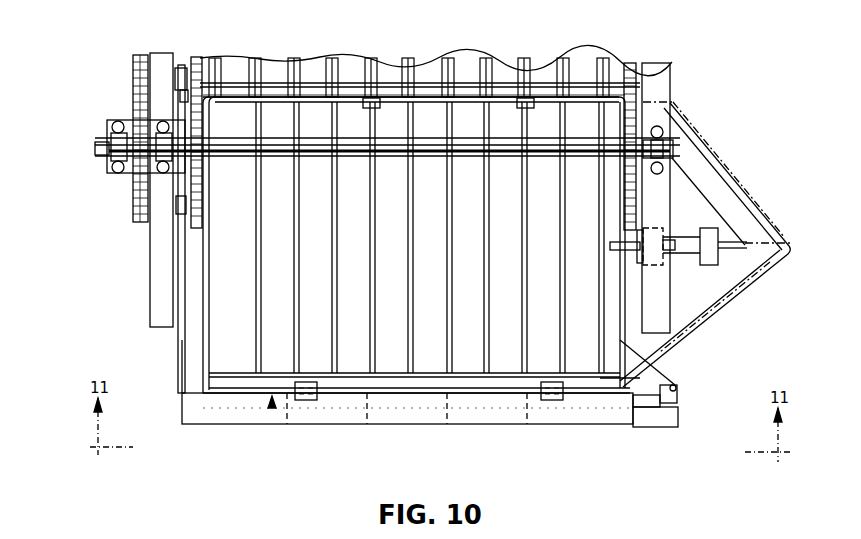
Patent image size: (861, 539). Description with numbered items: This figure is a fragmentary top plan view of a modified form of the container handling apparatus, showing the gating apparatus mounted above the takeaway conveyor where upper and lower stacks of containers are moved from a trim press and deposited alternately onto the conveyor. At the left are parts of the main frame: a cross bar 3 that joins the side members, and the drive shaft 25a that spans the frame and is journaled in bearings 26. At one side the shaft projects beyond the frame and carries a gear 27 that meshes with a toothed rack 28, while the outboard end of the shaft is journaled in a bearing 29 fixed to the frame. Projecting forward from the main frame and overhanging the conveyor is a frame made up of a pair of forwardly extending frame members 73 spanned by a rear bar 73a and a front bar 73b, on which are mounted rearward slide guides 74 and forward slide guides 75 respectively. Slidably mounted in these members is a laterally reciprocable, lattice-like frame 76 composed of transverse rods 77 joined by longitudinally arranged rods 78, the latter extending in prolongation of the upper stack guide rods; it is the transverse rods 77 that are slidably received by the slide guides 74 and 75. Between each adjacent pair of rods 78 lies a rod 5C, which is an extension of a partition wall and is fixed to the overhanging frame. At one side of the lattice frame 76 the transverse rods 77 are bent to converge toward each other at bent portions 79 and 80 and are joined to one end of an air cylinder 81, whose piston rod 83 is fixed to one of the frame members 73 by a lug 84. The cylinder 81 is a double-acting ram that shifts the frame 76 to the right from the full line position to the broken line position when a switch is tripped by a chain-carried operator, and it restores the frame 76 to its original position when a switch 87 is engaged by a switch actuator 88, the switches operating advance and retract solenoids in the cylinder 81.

The cross bar 3 is at (543, 83).
The rod 5C is at (450, 350).
The shaft 25a is at (95, 147).
The bearing 26 is at (163, 137).
The gear 27 is at (128, 172).
The toothed rack 28 is at (140, 225).
The bearing 29 is at (658, 145).
The frame member 73 is at (183, 380).
The rear bar 73a is at (402, 412).
The front bar 73b is at (235, 110).
The rearward slide guide 74 is at (377, 103).
The forward slide guide 75 is at (305, 400).
The lattice-like frame 76 is at (272, 405).
The transverse rod 77 is at (310, 100).
The longitudinal rod 78 is at (252, 300).
The converging bent portion 79 is at (717, 332).
The converging bent portion 80 is at (743, 197).
The air cylinder 81 is at (678, 247).
The piston rod 83 is at (635, 252).
The lug 84 is at (620, 250).
The switch 87 is at (667, 417).
The switch actuator 88 is at (663, 397).